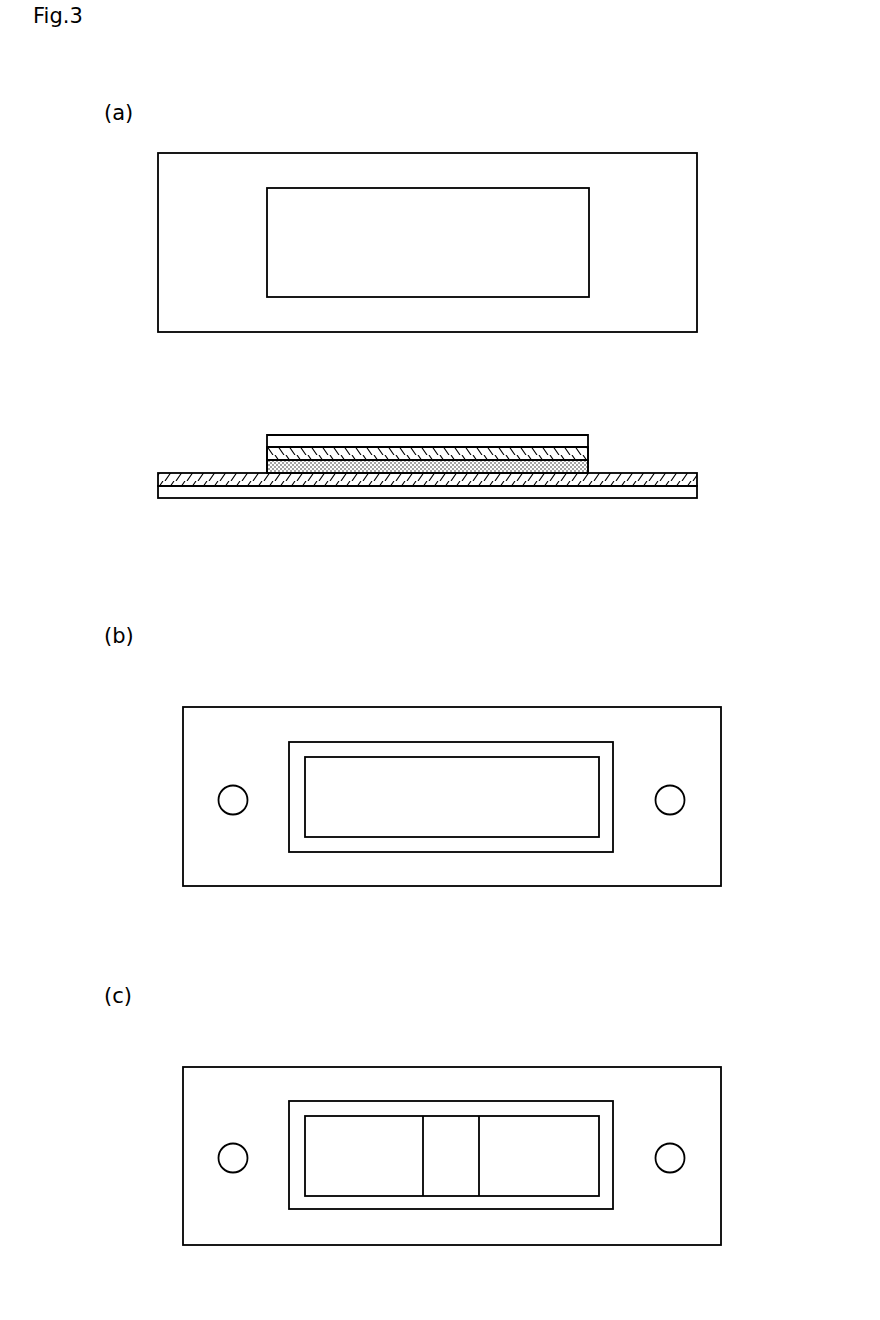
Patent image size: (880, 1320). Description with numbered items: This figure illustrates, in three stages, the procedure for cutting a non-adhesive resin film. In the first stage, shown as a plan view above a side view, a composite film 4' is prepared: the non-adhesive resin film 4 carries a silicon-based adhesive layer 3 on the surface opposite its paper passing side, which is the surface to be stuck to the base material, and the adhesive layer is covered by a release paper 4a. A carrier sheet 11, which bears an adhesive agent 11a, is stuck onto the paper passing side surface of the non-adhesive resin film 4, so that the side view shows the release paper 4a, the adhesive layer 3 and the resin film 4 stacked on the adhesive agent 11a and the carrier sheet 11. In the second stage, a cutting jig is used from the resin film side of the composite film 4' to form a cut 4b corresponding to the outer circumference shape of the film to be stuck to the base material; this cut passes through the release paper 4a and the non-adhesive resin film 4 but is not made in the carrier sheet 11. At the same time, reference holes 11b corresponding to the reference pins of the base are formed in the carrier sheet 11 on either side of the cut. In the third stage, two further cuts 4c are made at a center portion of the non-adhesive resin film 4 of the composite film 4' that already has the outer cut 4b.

The silicon-based adhesive layer 3 is at (510, 450).
The non-adhesive resin film 4 is at (406, 639).
The composite film 4' is at (374, 388).
The release paper 4a is at (315, 213).
The cut 4b is at (532, 757).
The cuts 4c is at (421, 1133).
The carrier sheet 11 is at (650, 152).
The adhesive agent 11a is at (647, 478).
The reference holes 11b is at (232, 798).